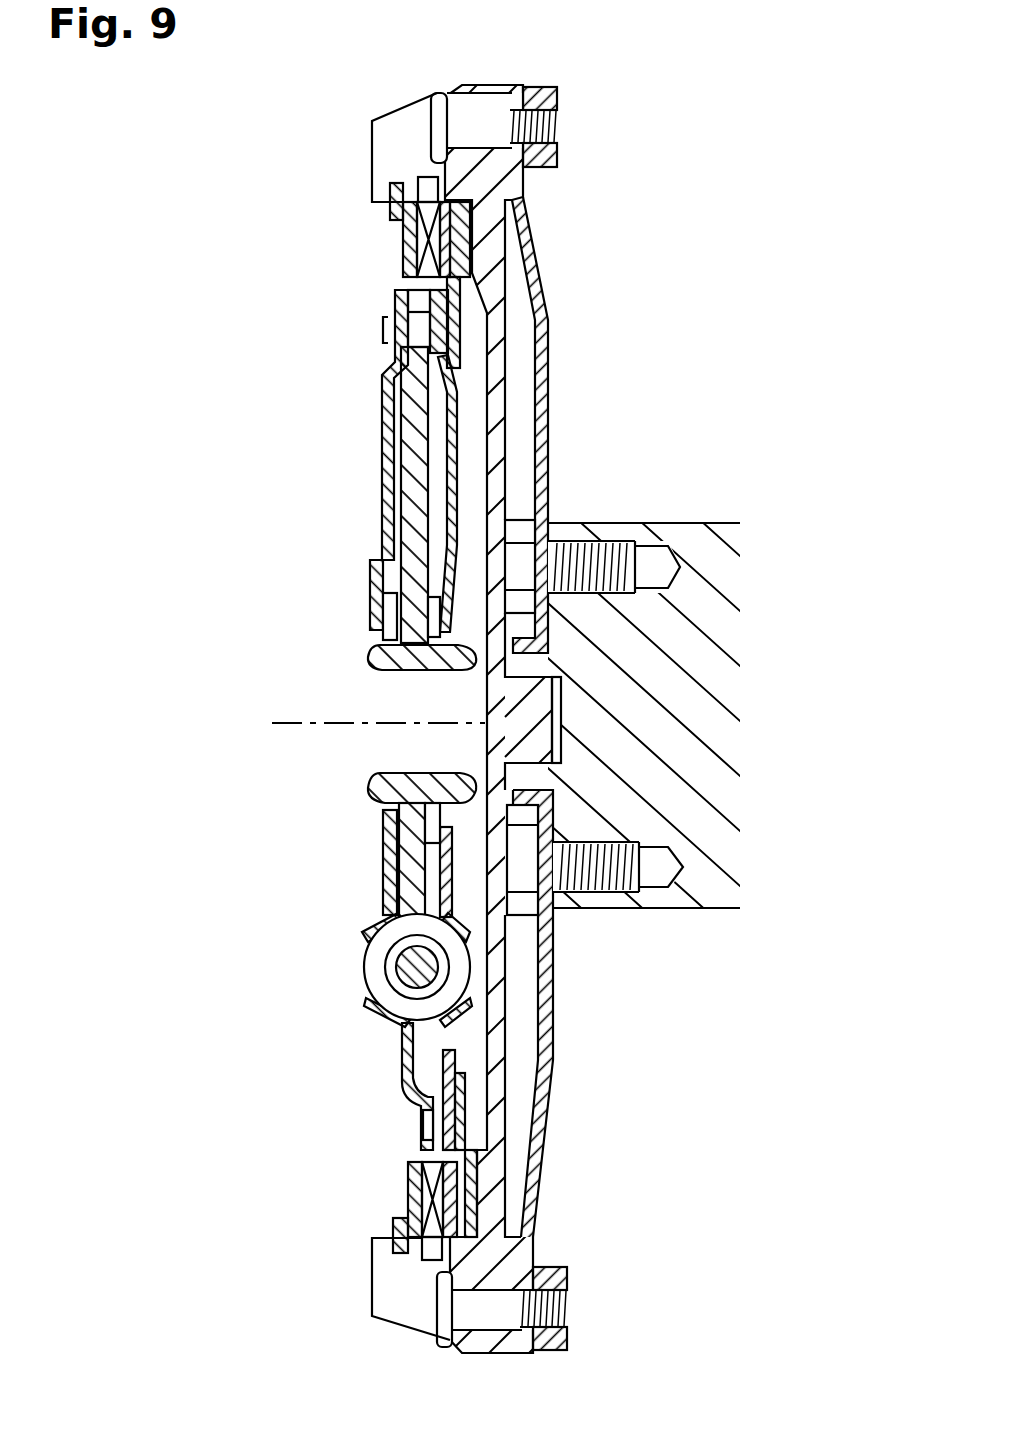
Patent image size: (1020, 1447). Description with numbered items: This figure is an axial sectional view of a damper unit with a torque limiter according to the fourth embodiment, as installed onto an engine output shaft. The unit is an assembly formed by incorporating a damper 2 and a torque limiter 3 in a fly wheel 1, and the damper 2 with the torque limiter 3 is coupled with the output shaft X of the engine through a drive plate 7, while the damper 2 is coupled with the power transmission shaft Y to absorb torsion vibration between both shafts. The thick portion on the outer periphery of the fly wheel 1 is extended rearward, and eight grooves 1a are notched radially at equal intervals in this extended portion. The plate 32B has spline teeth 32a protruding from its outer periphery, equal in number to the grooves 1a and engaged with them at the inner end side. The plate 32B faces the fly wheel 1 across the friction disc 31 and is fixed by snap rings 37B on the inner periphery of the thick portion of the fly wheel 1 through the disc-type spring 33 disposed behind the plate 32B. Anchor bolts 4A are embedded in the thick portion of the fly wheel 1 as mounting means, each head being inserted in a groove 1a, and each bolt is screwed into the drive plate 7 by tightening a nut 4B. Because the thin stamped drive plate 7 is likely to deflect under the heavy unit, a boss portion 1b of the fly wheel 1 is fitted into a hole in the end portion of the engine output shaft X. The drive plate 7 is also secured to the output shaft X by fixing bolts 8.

The fly wheel 1 is at (504, 355).
The groove 1a is at (390, 150).
The boss portion 1b is at (543, 727).
The damper 2 is at (338, 605).
The torque limiter 3 is at (358, 252).
The drive plate 7 is at (547, 465).
The fixing bolt 8 is at (523, 567).
The friction disc 31 is at (478, 1158).
The spline teeth 32a is at (395, 205).
The plate 32B is at (410, 272).
The disc-type spring 33 is at (408, 1180).
The snap ring 37B is at (395, 1232).
The anchor bolt 4A is at (440, 125).
The nut 4B is at (555, 152).
The output shaft X is at (668, 522).
The power transmission shaft Y is at (303, 725).